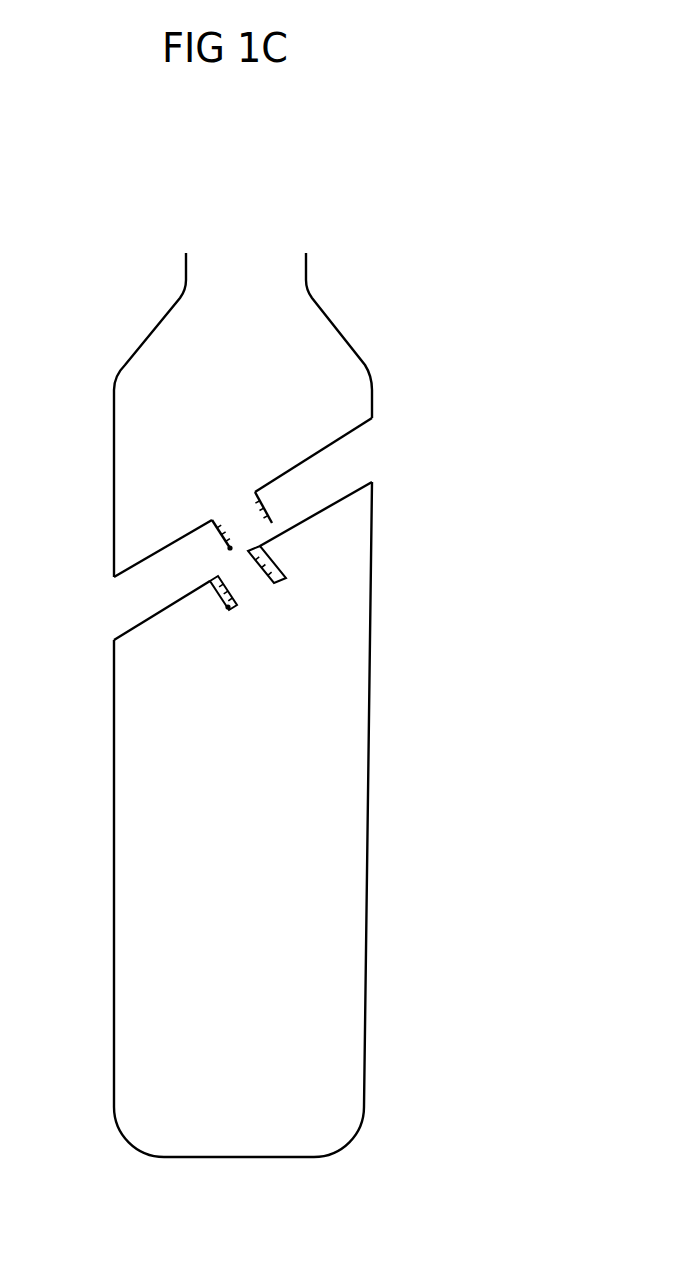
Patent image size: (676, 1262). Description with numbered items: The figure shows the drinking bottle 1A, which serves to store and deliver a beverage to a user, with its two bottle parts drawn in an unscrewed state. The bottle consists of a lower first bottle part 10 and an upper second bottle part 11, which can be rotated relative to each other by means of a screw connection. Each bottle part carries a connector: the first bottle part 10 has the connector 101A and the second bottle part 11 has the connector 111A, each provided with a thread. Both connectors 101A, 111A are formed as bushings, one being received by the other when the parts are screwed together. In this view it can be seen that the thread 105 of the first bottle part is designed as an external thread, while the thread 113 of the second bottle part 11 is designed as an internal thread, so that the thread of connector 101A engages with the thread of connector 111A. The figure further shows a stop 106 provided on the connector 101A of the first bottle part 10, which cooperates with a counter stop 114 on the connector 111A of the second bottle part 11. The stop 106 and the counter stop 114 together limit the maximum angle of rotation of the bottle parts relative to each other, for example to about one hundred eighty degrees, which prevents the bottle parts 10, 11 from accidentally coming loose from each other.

The first bottle part 10 is at (370, 652).
The second bottle part 11 is at (372, 387).
The drinking bottle 1A is at (400, 447).
The connector 101A is at (286, 563).
The connector 111A is at (243, 490).
The thread 113 is at (226, 516).
The counter stop 114 is at (230, 548).
The thread 105 is at (210, 583).
The stop 106 is at (227, 609).